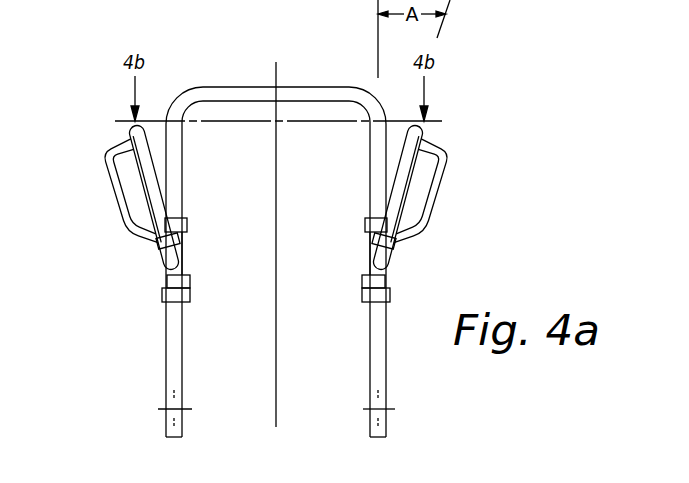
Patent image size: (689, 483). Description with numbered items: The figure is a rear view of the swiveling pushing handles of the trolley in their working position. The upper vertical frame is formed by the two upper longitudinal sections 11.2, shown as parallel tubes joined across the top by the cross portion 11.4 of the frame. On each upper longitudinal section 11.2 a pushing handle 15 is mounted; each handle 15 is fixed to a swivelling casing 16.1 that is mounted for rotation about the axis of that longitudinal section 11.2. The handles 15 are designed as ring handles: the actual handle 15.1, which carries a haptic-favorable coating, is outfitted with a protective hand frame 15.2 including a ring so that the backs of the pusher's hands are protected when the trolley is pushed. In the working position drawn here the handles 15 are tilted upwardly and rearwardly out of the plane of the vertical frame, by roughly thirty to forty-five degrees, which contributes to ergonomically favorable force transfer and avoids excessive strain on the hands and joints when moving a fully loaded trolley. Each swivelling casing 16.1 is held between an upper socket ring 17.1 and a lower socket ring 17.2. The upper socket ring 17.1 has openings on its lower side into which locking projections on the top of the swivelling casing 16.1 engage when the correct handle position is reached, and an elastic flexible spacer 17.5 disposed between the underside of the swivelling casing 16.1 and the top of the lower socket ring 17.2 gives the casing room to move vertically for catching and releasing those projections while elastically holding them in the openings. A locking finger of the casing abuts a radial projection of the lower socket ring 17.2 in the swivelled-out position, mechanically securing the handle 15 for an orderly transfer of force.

The upper longitudinal section 11.2 is at (166, 372).
The frame cross tube 11.4 is at (311, 87).
The pushing handle 15 is at (274, 183).
The actual handle 15.1 is at (138, 176).
The protective hand frame 15.2 is at (122, 210).
The swivelling casing 16.1 is at (186, 254).
The upper socket ring 17.1 is at (188, 224).
The lower socket ring 17.2 is at (190, 294).
The elastic flexible spacer 17.5 is at (167, 280).